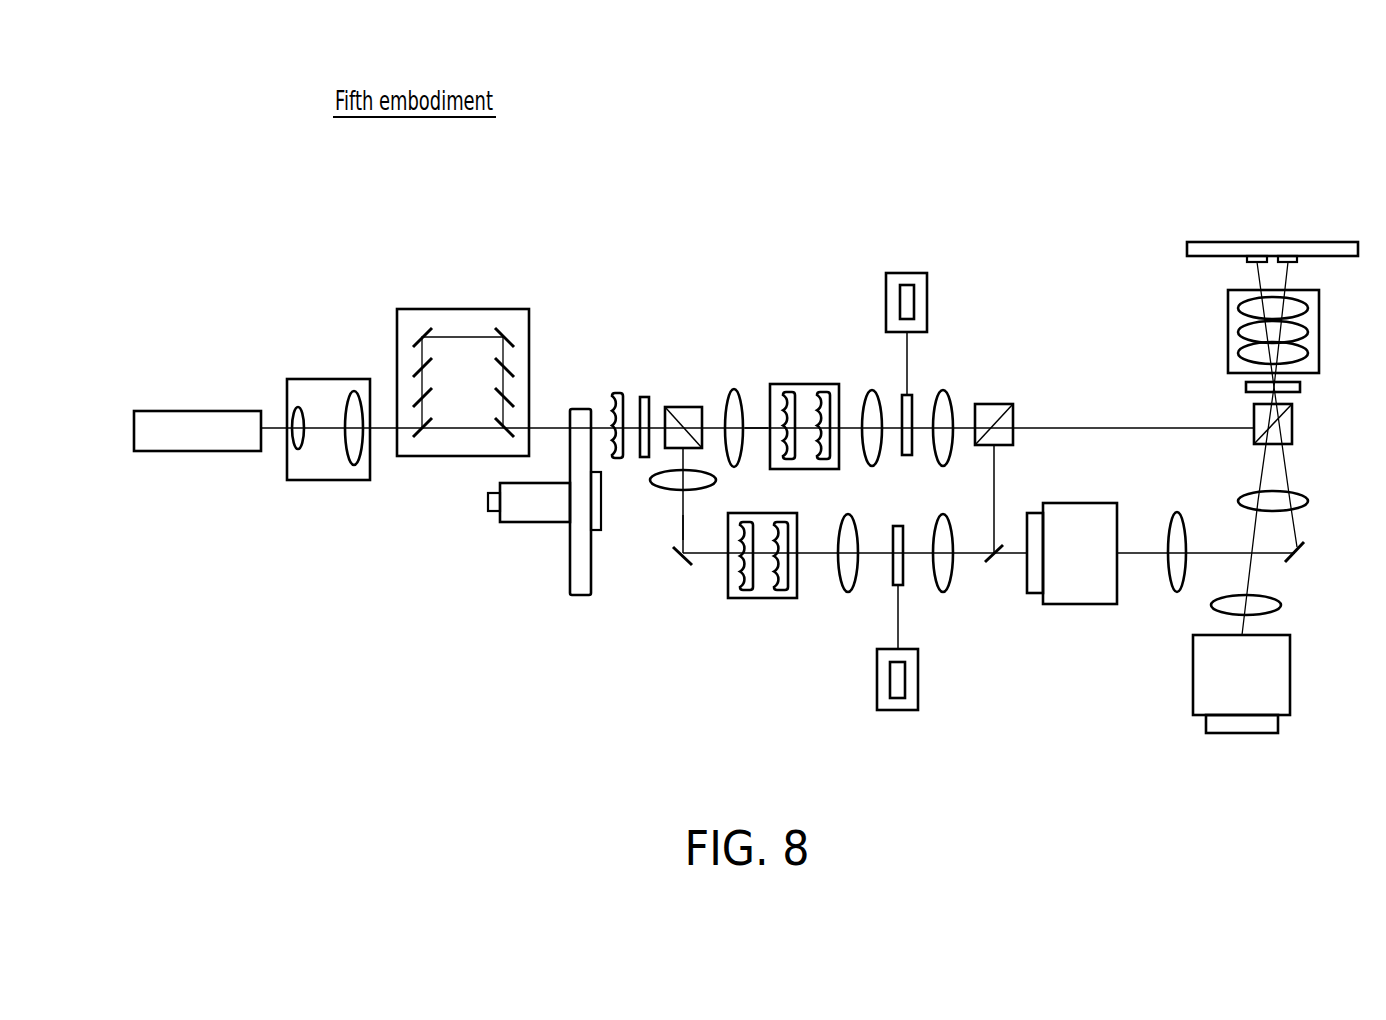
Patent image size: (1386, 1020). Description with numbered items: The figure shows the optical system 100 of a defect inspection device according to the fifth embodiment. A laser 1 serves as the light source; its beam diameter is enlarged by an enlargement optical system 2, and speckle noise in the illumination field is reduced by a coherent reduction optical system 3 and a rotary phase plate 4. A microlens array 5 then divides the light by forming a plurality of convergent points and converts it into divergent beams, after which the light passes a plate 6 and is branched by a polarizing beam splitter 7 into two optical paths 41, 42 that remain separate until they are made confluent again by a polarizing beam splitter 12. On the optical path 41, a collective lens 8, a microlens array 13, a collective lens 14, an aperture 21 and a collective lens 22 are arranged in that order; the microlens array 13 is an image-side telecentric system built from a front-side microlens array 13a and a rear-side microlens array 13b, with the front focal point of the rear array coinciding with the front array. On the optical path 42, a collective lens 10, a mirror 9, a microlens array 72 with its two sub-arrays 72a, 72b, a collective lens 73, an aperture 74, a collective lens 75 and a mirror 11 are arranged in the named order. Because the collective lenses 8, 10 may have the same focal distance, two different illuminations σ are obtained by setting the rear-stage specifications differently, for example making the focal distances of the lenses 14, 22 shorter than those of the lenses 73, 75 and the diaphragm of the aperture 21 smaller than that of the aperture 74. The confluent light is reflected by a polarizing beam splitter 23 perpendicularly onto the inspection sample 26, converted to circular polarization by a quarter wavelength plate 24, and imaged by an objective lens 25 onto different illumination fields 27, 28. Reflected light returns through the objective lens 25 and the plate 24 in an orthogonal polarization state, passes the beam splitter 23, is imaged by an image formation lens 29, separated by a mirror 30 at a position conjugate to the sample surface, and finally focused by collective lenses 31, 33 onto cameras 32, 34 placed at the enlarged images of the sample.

The laser 1 is at (229, 410).
The enlargement optical system 2 is at (320, 378).
The coherent reduction optical system 3 is at (482, 309).
The rotary phase plate 4 is at (526, 524).
The microlens array 5 is at (614, 393).
The polarizer 6 is at (644, 397).
The polarizing beam splitter 7 is at (684, 407).
The collective lens 8 is at (734, 389).
The mirror 9 is at (683, 568).
The collective lens 10 is at (652, 486).
The mirror 11 is at (994, 568).
The polarizing beam splitter 12 is at (994, 404).
The microlens array 13 is at (815, 422).
The front-side microlens array 13a is at (788, 460).
The rear-side microlens array 13b is at (827, 461).
The collective lens 14 is at (872, 389).
The aperture 21 is at (908, 273).
The collective lens 22 is at (943, 389).
The polarizing beam splitter 23 is at (1294, 428).
The ¼ wavelength plate 24 is at (1302, 388).
The objective lens 25 is at (1228, 337).
The inspection sample 26 is at (1300, 242).
The illumination field 27 is at (1245, 262).
The illumination field 28 is at (1300, 262).
The image formation lens 29 is at (1310, 500).
The mirror 30 is at (1308, 560).
The collective lens 31 is at (1176, 594).
The camera 32 is at (1075, 606).
The collective lens 33 is at (1283, 604).
The camera 34 is at (1292, 668).
The optical path 41 is at (757, 431).
The optical path 42 is at (683, 528).
The microlens array 72 is at (762, 583).
The first modulator element 72a is at (746, 598).
The second modulator element 72b is at (786, 598).
The collective lens 73 is at (848, 595).
The aperture 74 is at (898, 712).
The collective lens 75 is at (943, 595).
The optical system 100 is at (885, 177).